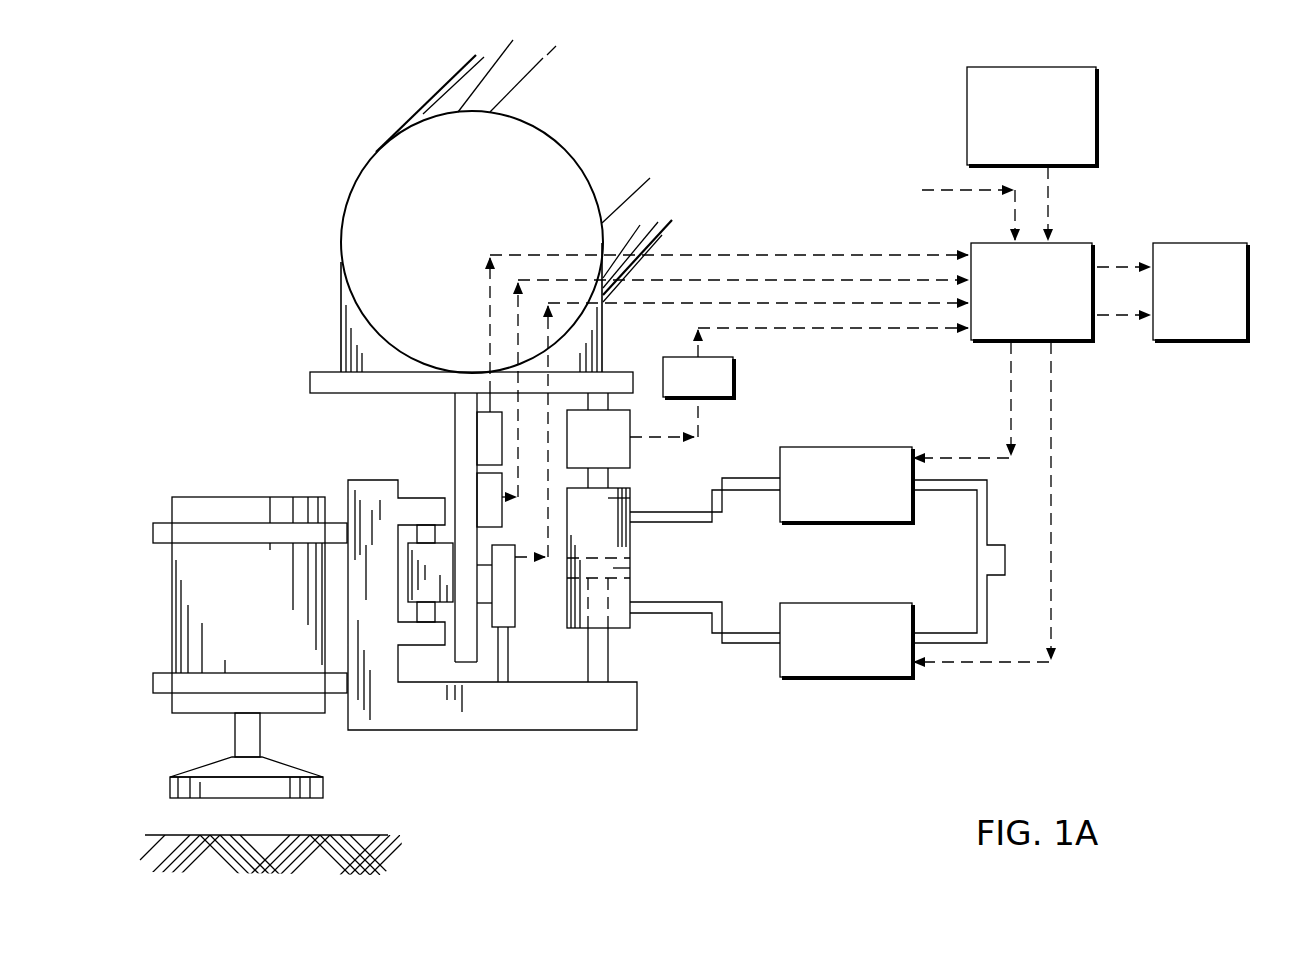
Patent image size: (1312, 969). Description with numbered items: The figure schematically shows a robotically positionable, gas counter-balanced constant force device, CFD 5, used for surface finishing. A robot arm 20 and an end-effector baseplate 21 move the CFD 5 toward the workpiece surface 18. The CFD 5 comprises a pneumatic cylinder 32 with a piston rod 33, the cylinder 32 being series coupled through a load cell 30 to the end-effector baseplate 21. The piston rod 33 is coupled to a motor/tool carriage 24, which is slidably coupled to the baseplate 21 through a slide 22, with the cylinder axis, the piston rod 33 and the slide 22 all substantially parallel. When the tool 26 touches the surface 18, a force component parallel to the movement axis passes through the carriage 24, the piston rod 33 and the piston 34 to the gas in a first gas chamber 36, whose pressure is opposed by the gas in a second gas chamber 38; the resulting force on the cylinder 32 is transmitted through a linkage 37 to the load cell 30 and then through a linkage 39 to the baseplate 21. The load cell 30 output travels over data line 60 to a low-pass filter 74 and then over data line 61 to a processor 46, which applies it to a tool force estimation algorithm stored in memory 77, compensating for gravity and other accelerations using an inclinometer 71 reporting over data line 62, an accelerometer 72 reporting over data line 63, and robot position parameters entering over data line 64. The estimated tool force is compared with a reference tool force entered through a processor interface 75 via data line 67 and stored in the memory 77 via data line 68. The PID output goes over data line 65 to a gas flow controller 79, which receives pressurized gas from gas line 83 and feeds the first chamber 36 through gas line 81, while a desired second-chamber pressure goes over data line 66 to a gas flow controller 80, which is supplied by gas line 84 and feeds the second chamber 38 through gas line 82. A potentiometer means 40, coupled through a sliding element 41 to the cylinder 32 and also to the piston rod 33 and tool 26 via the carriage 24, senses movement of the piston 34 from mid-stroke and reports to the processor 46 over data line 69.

The CFD 5 is at (168, 330).
The workpiece surface 18 is at (370, 835).
The robot arm 20 is at (420, 110).
The end-effector baseplate 21 is at (310, 384).
The slide 22 is at (428, 528).
The motor/tool carriage 24 is at (440, 735).
The tool 26 is at (316, 787).
The load cell 30 is at (632, 424).
The pneumatic cylinder 32 is at (633, 535).
The piston rod 33 is at (601, 651).
The piston 34 is at (615, 570).
The first gas chamber 36 is at (610, 498).
The linkage 37 is at (600, 478).
The second gas chamber 38 is at (622, 620).
The linkage 39 is at (612, 400).
The potentiometer means 40 is at (510, 612).
The sliding element 41 is at (505, 655).
The processor 46 is at (1080, 242).
The data line 60 is at (698, 424).
The data line 61 is at (885, 328).
The data line 62 is at (838, 280).
The data line 63 is at (922, 254).
The data line 64 is at (968, 190).
The data line 65 is at (1010, 405).
The data line 66 is at (1020, 662).
The data line 67 is at (1050, 207).
The data line 68 is at (1107, 267).
The data line 69 is at (786, 305).
The inclinometer 71 is at (483, 503).
The accelerometer 72 is at (483, 438).
The low-pass filter 74 is at (734, 376).
The processor interface 75 is at (1097, 105).
The memory 77 is at (1248, 296).
The gas flow controller 79 is at (855, 447).
The gas flow controller 80 is at (855, 677).
The gas line 81 is at (748, 490).
The gas line 82 is at (750, 638).
The gas line 83 is at (928, 490).
The gas line 84 is at (922, 633).